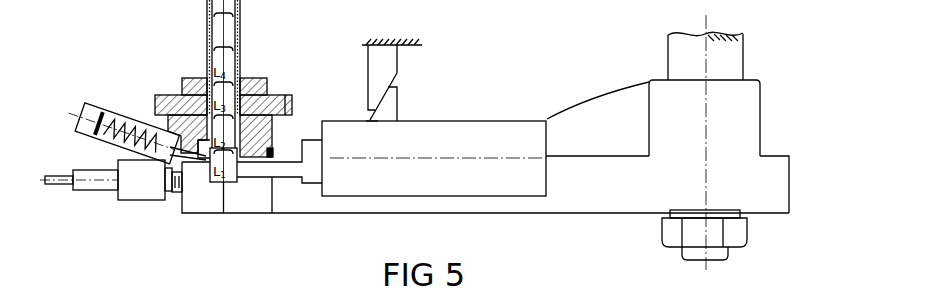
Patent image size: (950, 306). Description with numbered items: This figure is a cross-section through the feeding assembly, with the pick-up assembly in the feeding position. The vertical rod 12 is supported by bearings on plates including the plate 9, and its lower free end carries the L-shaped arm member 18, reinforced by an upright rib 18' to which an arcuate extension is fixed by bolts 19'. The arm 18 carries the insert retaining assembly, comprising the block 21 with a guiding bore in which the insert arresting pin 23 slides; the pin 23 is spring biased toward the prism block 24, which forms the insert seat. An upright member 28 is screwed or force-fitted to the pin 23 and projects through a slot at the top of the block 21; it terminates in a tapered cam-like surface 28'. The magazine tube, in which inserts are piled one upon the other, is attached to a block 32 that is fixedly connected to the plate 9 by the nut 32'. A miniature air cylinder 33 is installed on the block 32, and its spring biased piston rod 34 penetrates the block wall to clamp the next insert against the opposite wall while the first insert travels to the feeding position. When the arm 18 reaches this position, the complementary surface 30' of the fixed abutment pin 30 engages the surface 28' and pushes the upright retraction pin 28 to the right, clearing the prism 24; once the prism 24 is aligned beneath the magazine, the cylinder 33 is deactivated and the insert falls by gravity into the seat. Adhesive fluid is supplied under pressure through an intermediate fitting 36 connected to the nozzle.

The plate 9 is at (288, 97).
The vertical rod 12 is at (730, 53).
The L-shaped arm member 18 is at (694, 142).
The upright rib 18' is at (598, 80).
The bolts 19' is at (143, 218).
The block 21 is at (447, 180).
The insert arresting pin 23 is at (300, 186).
The prism block 24 is at (200, 210).
The upright member 28 is at (426, 100).
The tapered cam-like surface 28' is at (348, 102).
The abutment pin 30 is at (362, 77).
The complementary surface 30' is at (418, 84).
The block 32 is at (159, 59).
The nut 32' is at (268, 59).
The miniature air cylinder 33 is at (106, 108).
The spring biased piston rod 34 is at (207, 162).
The intermediate fitting 36 is at (133, 193).